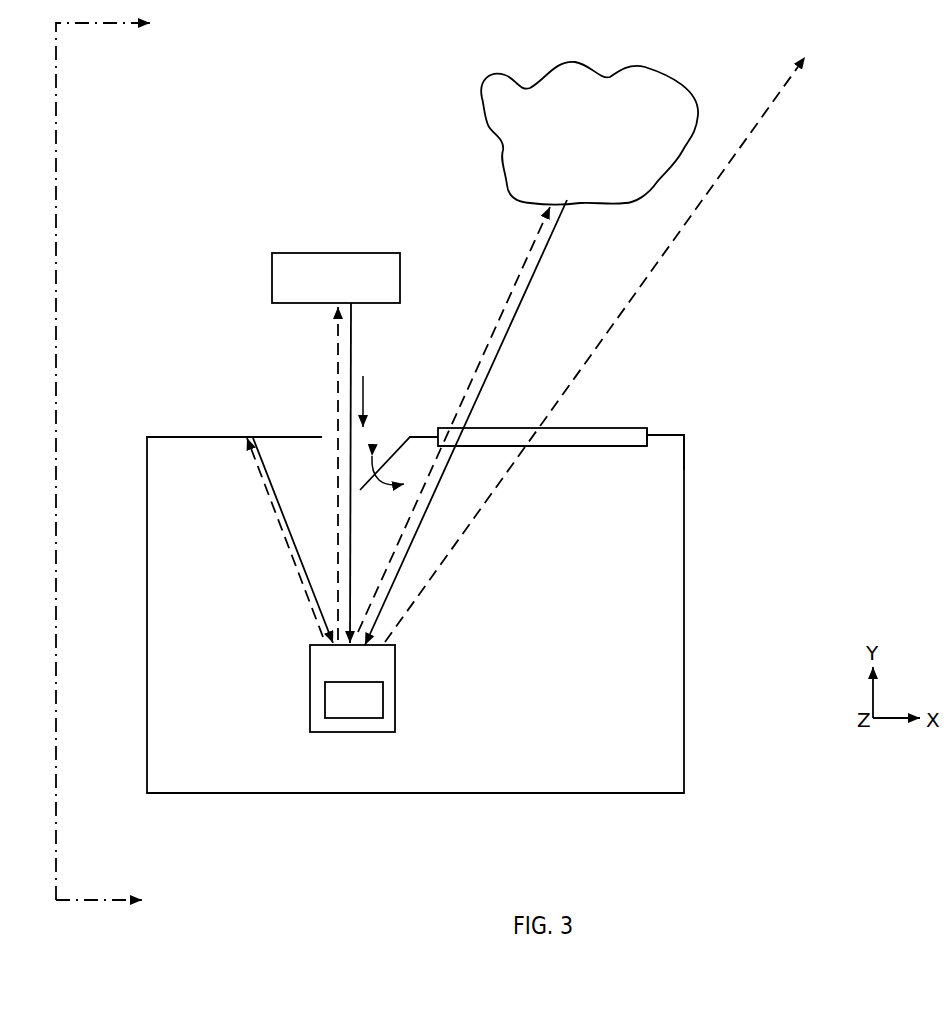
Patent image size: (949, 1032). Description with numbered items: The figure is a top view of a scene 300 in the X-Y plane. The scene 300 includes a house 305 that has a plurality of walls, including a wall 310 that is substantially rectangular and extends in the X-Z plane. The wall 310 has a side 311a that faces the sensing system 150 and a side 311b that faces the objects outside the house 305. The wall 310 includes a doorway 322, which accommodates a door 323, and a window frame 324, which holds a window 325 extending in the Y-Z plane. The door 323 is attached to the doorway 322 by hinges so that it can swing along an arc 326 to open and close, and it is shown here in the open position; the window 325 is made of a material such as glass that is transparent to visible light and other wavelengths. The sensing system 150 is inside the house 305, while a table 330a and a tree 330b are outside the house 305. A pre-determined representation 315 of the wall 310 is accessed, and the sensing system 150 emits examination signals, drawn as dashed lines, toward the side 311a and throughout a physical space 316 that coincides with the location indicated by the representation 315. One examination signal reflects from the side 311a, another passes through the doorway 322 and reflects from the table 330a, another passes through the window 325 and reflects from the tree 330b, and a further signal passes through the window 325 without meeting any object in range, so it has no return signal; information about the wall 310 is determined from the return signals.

The scene 300 is at (447, 463).
The house 305 is at (710, 756).
The wall 310 is at (670, 432).
The side 311a is at (180, 438).
The side 311b is at (163, 438).
The sensing system 150 is at (352, 688).
The pre-determined representation 315 is at (354, 700).
The physical space 316 is at (558, 460).
The doorway 322 is at (365, 374).
The door 323 is at (387, 461).
The window frame 324 is at (650, 437).
The window 325 is at (603, 440).
The arc 326 is at (387, 484).
The table 330a is at (336, 278).
The tree 330b is at (589, 133).